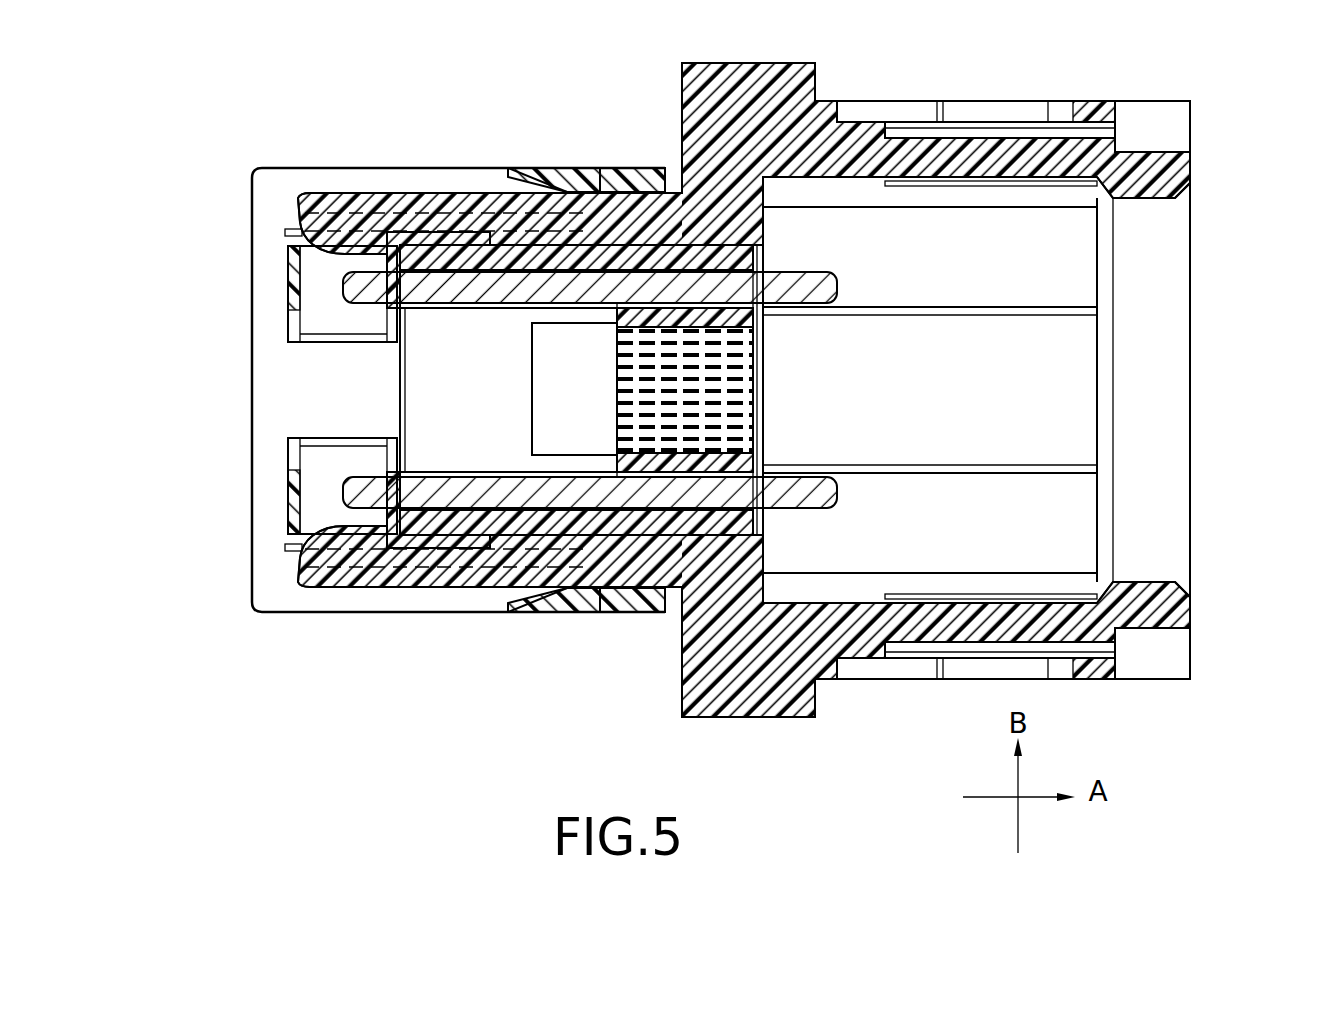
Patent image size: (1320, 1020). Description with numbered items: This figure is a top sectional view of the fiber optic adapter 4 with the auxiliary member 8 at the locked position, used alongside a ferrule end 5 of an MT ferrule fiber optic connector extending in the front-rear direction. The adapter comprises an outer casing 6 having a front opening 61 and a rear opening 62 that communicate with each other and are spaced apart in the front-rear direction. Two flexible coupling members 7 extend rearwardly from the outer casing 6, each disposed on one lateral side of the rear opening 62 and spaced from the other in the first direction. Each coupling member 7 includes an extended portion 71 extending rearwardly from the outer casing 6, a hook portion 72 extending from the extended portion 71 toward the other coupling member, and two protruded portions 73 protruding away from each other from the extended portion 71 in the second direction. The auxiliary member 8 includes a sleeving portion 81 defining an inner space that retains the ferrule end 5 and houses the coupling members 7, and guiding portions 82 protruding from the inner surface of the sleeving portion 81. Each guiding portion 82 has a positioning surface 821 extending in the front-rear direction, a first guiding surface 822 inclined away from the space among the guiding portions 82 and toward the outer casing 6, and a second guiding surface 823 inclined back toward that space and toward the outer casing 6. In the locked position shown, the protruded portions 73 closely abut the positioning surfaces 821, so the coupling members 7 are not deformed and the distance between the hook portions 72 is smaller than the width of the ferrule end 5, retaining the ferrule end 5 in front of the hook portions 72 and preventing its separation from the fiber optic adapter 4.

The fiber optic adapter 4 is at (1006, 344).
The ferrule end 5 is at (422, 380).
The outer casing 6 is at (744, 364).
The front opening 61 is at (1148, 203).
The rear opening 62 is at (758, 262).
The coupling member 7 is at (440, 391).
The extended portion 71 is at (643, 187).
The hook portion 72 is at (335, 252).
The protruded portion 73 is at (375, 195).
The auxiliary member 8 is at (420, 378).
The sleeving portion 81 is at (276, 178).
The guiding portion 82 is at (379, 392).
The positioning surface 821 is at (334, 198).
The first guiding surface 822 is at (455, 197).
The second guiding surface 823 is at (575, 177).